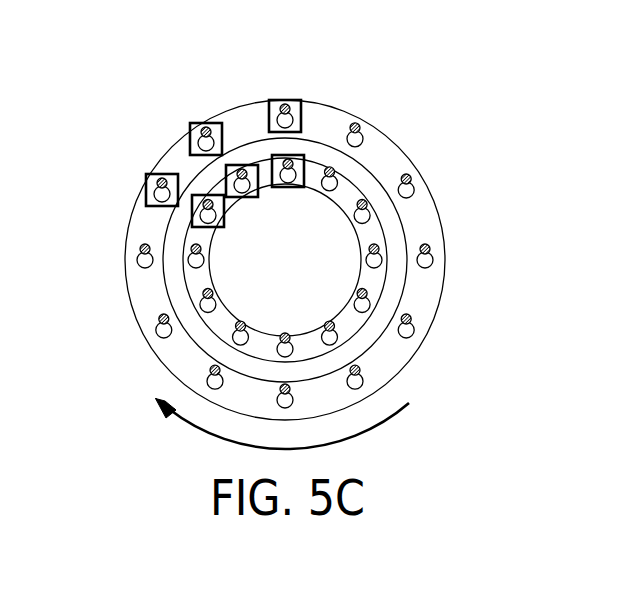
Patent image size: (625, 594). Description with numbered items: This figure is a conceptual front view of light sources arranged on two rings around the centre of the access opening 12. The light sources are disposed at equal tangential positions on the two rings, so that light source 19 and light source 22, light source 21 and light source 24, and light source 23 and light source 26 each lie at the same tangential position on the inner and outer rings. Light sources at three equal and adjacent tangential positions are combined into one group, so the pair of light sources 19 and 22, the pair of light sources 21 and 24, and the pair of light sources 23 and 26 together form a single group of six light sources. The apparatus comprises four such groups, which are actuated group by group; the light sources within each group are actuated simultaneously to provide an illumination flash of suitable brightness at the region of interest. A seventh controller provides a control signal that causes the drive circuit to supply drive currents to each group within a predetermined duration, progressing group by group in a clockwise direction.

The access opening 12 is at (282, 262).
The light source 19 is at (146, 190).
The light source 21 is at (205, 123).
The light source 22 is at (192, 213).
The light source 23 is at (287, 99).
The light source 24 is at (243, 165).
The light source 26 is at (305, 163).